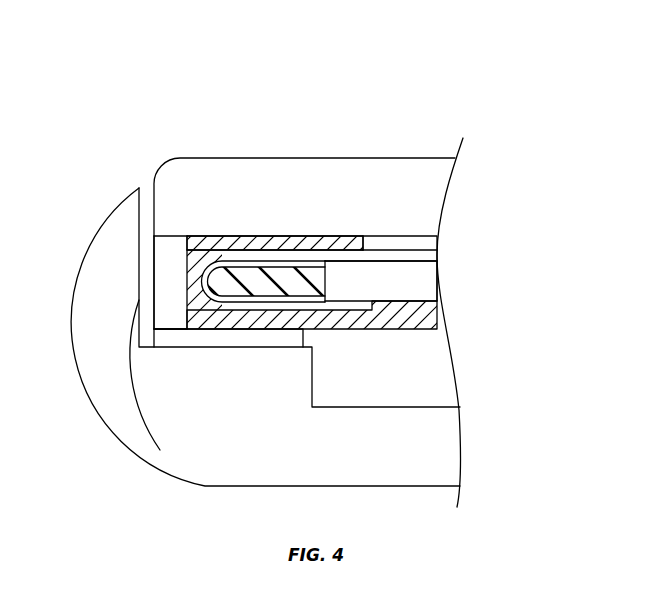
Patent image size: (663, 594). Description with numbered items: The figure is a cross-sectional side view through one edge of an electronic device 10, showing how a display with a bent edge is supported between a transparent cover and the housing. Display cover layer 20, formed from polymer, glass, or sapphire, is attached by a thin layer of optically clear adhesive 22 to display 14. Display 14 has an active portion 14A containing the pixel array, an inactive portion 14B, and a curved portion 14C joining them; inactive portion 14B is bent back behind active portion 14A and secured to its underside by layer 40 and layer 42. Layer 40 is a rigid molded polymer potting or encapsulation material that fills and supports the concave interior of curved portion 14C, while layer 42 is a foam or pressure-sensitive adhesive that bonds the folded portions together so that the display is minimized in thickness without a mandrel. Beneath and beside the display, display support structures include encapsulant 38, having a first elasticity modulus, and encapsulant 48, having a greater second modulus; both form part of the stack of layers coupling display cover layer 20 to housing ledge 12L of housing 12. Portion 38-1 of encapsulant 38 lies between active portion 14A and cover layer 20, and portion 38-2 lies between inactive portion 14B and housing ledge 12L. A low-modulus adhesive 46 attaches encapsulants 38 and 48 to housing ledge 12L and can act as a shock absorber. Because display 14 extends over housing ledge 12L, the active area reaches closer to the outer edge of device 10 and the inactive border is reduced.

The electronic device 10 is at (157, 92).
The housing 12 is at (192, 452).
The housing ledge 12L is at (195, 348).
The display 14 is at (404, 257).
The active portion 14A is at (318, 258).
The inactive portion 14B is at (323, 302).
The curved portion 14C is at (201, 275).
The display cover layer 20 is at (357, 175).
The adhesive 22 is at (393, 245).
The encapsulant 38 is at (273, 246).
The portion of encapsulant 38-1 is at (244, 244).
The portion of encapsulant 38-2 is at (287, 320).
The layer 40 is at (313, 276).
The layer 42 is at (414, 281).
The adhesive 46 is at (260, 336).
The encapsulant 48 is at (170, 285).